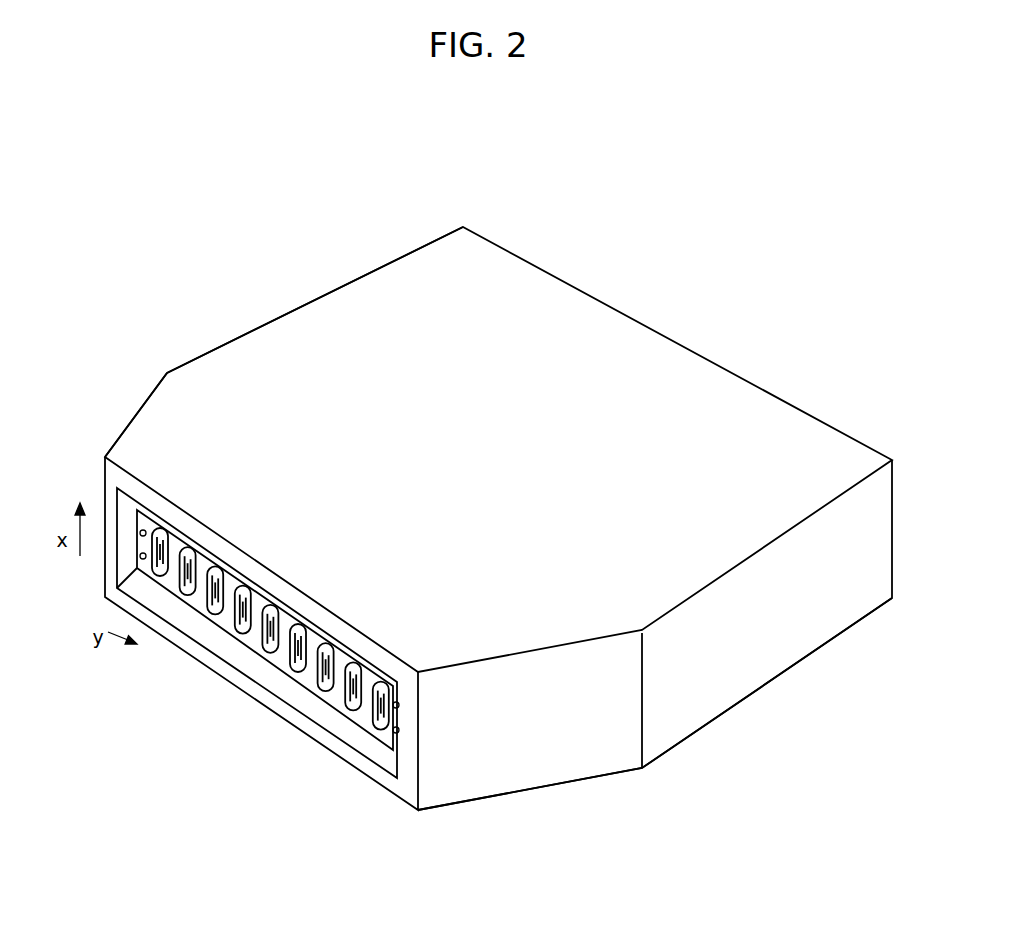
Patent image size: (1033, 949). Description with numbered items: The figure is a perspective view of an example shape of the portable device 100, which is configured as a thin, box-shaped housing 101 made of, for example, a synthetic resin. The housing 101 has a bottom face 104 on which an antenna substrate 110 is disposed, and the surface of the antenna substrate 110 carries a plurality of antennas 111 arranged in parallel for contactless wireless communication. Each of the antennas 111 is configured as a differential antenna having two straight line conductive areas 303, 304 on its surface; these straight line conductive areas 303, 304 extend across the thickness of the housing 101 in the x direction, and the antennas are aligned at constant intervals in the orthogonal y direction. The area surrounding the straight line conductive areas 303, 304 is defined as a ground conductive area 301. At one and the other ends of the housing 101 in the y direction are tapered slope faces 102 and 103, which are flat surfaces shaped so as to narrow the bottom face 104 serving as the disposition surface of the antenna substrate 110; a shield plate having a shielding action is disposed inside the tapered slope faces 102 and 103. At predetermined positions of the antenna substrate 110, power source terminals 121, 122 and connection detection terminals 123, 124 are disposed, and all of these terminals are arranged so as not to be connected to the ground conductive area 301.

The portable device 100 is at (641, 267).
The housing 101 is at (322, 312).
The tapered slope face 102 is at (136, 415).
The tapered slope face 103 is at (558, 752).
The bottom face 104 is at (232, 564).
The antenna substrate 110 is at (252, 640).
The antennas 111 is at (184, 594).
The power source terminal 121 is at (399, 705).
The power source terminal 122 is at (399, 731).
The connection detection terminal 123 is at (140, 531).
The connection detection terminal 124 is at (140, 556).
The ground conductive area 301 is at (170, 538).
The straight line conductive area 303 is at (294, 642).
The straight line conductive area 304 is at (306, 648).